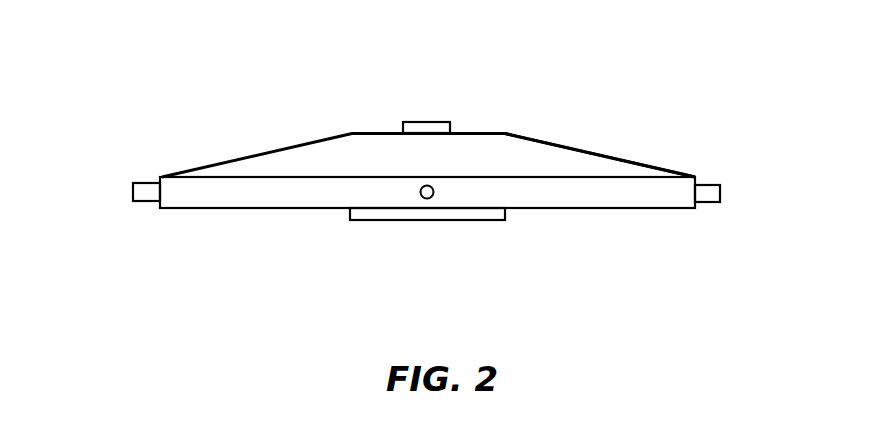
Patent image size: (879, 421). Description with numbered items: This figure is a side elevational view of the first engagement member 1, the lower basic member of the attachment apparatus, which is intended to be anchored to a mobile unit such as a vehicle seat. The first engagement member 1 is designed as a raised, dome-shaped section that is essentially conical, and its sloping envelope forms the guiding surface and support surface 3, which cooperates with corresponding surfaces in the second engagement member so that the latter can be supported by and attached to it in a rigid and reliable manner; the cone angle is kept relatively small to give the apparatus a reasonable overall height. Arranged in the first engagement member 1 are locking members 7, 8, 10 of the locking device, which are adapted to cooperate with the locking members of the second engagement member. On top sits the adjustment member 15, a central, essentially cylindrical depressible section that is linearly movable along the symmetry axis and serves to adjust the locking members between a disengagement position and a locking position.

The first engagement member 1 is at (258, 148).
The guiding surface and support surface 3 is at (553, 162).
The locking member 7 is at (428, 195).
The locking member 8 is at (710, 192).
The locking member 10 is at (140, 190).
The adjustment member 15 is at (470, 128).